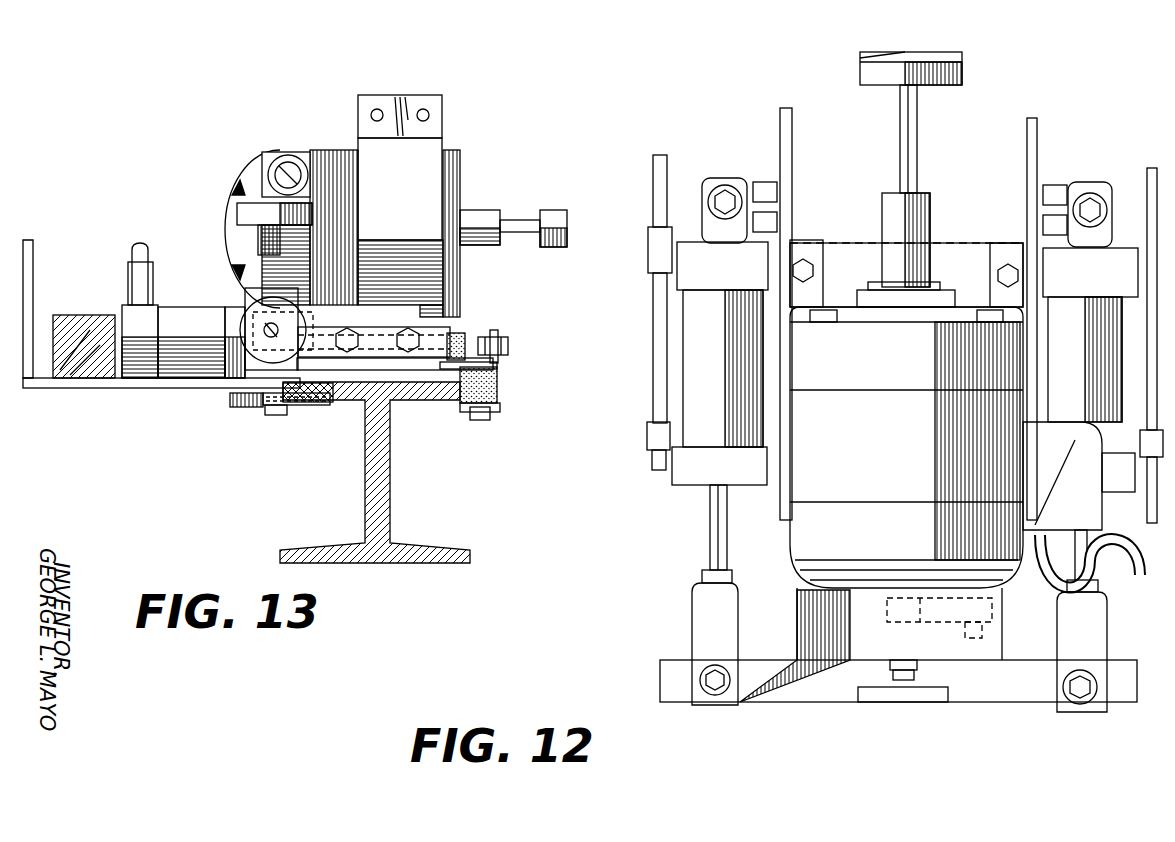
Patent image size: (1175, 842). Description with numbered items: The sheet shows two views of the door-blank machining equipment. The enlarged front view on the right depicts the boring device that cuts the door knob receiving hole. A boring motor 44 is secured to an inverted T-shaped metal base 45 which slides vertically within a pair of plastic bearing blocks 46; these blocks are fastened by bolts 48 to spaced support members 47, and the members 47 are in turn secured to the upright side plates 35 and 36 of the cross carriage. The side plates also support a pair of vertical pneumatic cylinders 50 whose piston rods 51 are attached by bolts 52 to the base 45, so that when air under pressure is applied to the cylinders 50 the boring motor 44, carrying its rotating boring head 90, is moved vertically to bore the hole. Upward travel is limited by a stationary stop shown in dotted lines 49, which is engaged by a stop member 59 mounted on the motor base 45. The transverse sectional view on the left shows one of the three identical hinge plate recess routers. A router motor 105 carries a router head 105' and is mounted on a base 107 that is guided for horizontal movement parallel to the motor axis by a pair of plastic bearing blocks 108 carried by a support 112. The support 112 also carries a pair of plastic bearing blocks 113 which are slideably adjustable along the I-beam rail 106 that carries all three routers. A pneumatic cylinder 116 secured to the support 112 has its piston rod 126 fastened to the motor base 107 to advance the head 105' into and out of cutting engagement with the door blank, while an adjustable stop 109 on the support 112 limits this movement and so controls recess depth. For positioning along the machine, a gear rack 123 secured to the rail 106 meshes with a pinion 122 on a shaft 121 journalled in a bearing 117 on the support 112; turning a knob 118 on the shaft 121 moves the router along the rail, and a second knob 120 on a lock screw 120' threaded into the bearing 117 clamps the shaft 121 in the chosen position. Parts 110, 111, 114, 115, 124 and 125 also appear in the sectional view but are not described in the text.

In FIG. 12, the side plate 35 is at (780, 115).
In FIG. 12, the side plate 36 is at (1037, 120).
In FIG. 12, the boring motor 44 is at (917, 437).
In FIG. 12, the inverted T-shaped metal base 45 is at (913, 703).
In FIG. 12, the plastic bearing blocks 46 is at (807, 243).
In FIG. 12, the support members 47 is at (822, 243).
In FIG. 12, the bolts 48 is at (814, 268).
In FIG. 12, the stationary stop 49 is at (993, 610).
In FIG. 12, the pneumatic cylinders 50 is at (737, 352).
In FIG. 12, the piston rods 51 is at (708, 517).
In FIG. 12, the bolts 52 is at (715, 673).
In FIG. 12, the stop member 59 is at (917, 667).
In FIG. 12, the boring head 90 is at (870, 62).
In FIG. 13, the router motor 105 is at (370, 205).
In FIG. 13, the router head 105' is at (519, 203).
In FIG. 13, the I-beam support 106 is at (390, 482).
In FIG. 13, the motor base 107 is at (462, 342).
In FIG. 13, the plastic bearing blocks 108 is at (508, 347).
In FIG. 13, the adjustable stop 109 is at (500, 332).
In FIG. 13, the motor 110 is at (400, 278).
In FIG. 13, the plate 111 is at (432, 370).
In FIG. 13, the support 112 is at (497, 365).
In FIG. 13, the plastic bearing blocks 113 is at (497, 395).
In FIG. 13, the bolt 114 is at (273, 417).
In FIG. 13, the arm 115 is at (460, 405).
In FIG. 13, the pneumatic cylinder 116 is at (193, 360).
In FIG. 13, the bearing 117 is at (247, 292).
In FIG. 13, the knob 118 is at (240, 210).
In FIG. 13, the second knob 120 is at (183, 310).
In FIG. 13, the lock screw 120' is at (374, 329).
In FIG. 13, the shaft 121 is at (230, 243).
In FIG. 13, the pinion 122 is at (240, 410).
In FIG. 13, the gear rack 123 is at (342, 403).
In FIG. 13, the block 124 is at (95, 313).
In FIG. 13, the plate 125 is at (33, 252).
In FIG. 13, the piston rod 126 is at (310, 227).